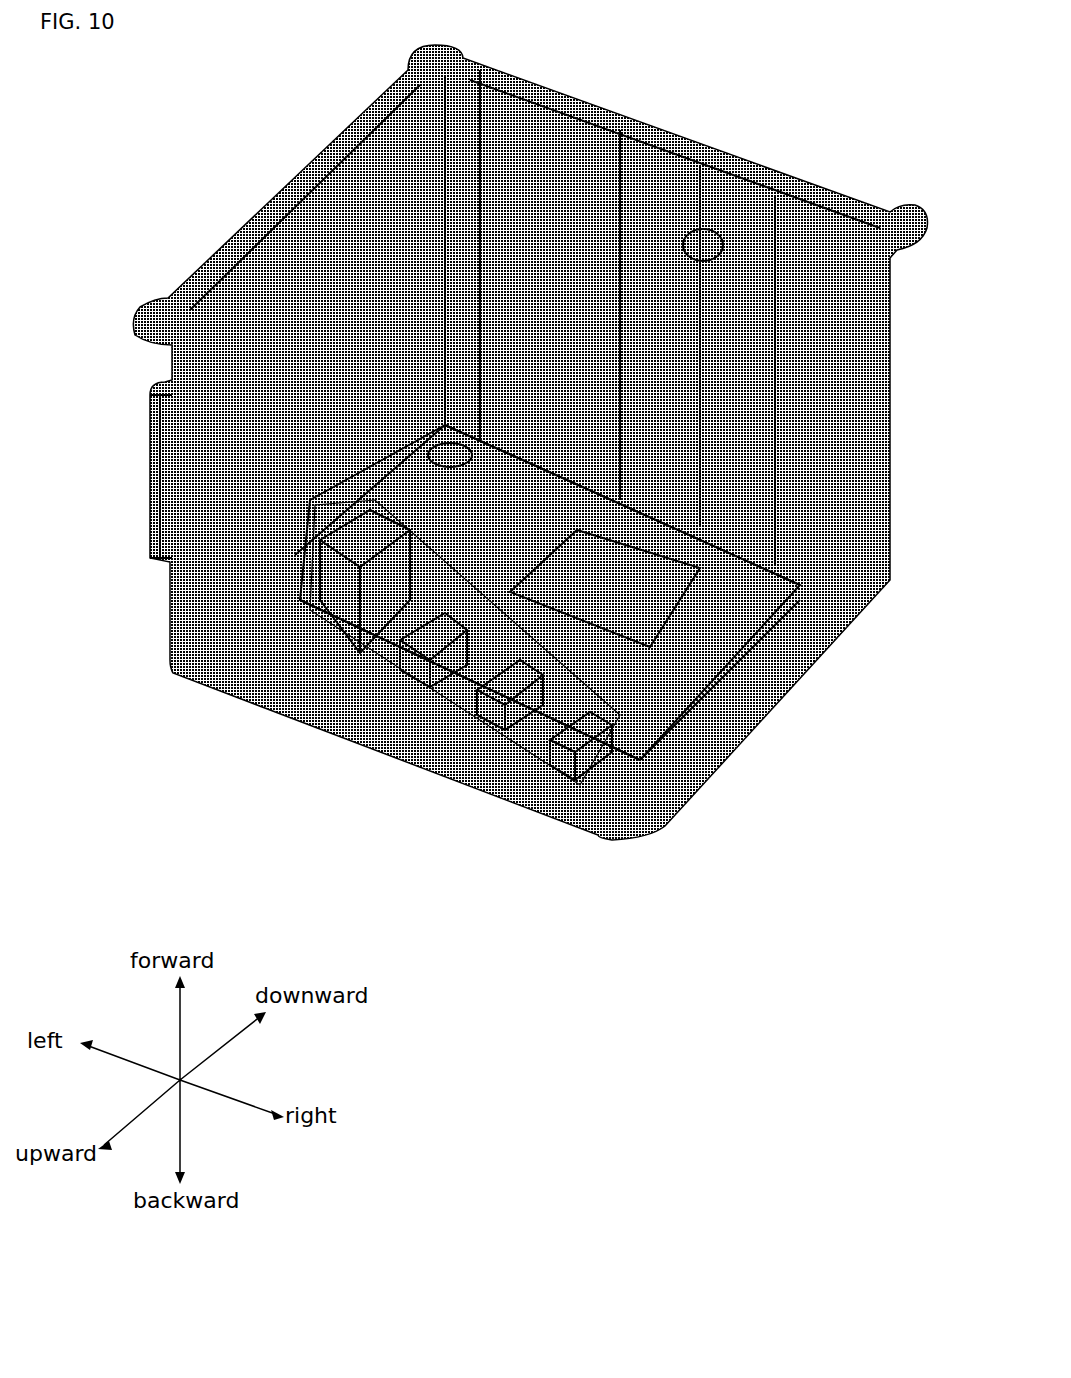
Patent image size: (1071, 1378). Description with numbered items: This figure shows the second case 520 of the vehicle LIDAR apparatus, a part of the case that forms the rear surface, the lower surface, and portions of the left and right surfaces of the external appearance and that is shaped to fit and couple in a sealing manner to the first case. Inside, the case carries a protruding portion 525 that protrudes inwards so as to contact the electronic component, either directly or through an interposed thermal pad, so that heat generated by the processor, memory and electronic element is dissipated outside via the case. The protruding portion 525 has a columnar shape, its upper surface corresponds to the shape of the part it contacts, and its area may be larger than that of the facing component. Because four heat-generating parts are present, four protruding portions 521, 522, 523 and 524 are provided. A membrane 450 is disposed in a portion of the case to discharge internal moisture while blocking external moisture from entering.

The membrane 450 is at (750, 161).
The second case 520 is at (172, 663).
The protruding portion 521 is at (313, 730).
The protruding portion 522 is at (363, 753).
The protruding portion 523 is at (443, 777).
The protruding portion 524 is at (515, 802).
The protruding portion 525 is at (523, 907).